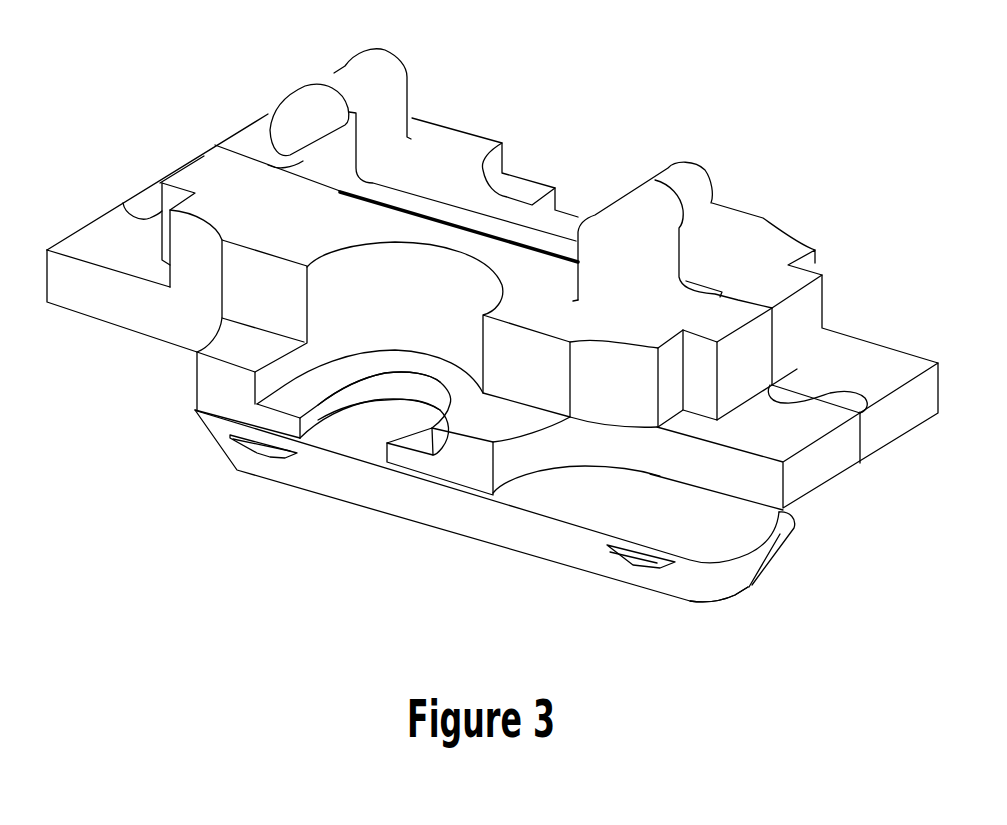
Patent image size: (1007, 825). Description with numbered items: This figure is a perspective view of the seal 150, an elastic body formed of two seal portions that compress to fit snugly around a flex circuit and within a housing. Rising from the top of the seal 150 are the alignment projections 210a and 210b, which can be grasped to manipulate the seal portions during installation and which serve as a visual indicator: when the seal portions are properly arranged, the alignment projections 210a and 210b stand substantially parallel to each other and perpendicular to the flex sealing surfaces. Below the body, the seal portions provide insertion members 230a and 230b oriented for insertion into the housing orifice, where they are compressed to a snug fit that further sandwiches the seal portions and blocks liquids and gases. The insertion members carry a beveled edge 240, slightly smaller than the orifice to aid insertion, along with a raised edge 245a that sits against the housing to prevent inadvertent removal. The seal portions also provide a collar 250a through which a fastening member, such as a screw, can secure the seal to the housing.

The seal 150 is at (158, 112).
The alignment projection 210a is at (705, 165).
The alignment projection 210b is at (293, 100).
The insertion member 230a is at (739, 610).
The insertion member 230b is at (797, 550).
The beveled edge 240 is at (462, 537).
The raised edge 245a is at (257, 458).
The collar 250a is at (357, 437).